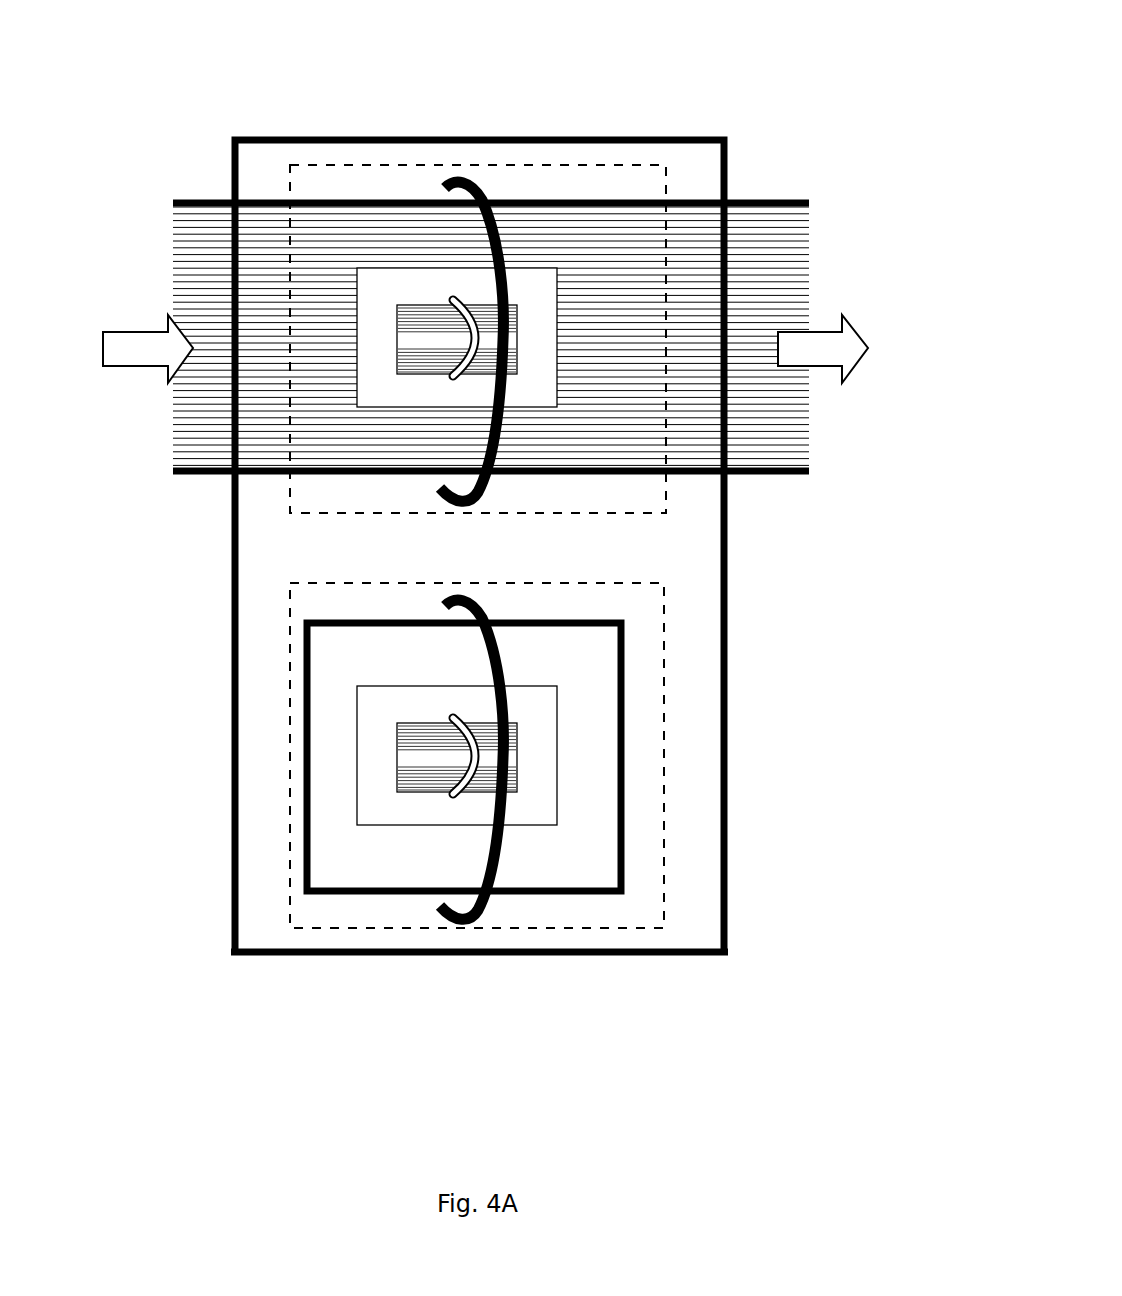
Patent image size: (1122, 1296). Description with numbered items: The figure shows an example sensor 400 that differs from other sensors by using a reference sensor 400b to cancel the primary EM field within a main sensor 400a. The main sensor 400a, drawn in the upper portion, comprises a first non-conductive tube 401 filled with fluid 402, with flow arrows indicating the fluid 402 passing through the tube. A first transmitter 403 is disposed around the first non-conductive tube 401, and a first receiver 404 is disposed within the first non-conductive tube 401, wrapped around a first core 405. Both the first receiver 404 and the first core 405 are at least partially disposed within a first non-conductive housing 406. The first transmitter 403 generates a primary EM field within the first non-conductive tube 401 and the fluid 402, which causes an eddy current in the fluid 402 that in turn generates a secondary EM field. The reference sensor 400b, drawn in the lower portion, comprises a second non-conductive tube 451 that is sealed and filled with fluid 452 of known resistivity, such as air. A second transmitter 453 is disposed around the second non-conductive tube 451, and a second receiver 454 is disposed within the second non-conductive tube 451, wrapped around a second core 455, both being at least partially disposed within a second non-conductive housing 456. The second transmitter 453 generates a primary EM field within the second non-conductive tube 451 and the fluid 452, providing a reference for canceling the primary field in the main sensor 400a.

The sensor 400 is at (650, 127).
The main sensor 400a is at (443, 165).
The reference sensor 400b is at (437, 928).
The first non-conductive tube 401 is at (760, 200).
The fluid 402 is at (463, 349).
The first transmitter 403 is at (478, 186).
The first receiver 404 is at (460, 380).
The first core 405 is at (397, 338).
The first non-conductive housing 406 is at (557, 340).
The second non-conductive tube 451 is at (322, 895).
The fluid of known resistivity 452 is at (332, 665).
The second transmitter 453 is at (480, 908).
The second receiver 454 is at (453, 800).
The second core 455 is at (397, 755).
The second non-conductive housing 456 is at (558, 762).